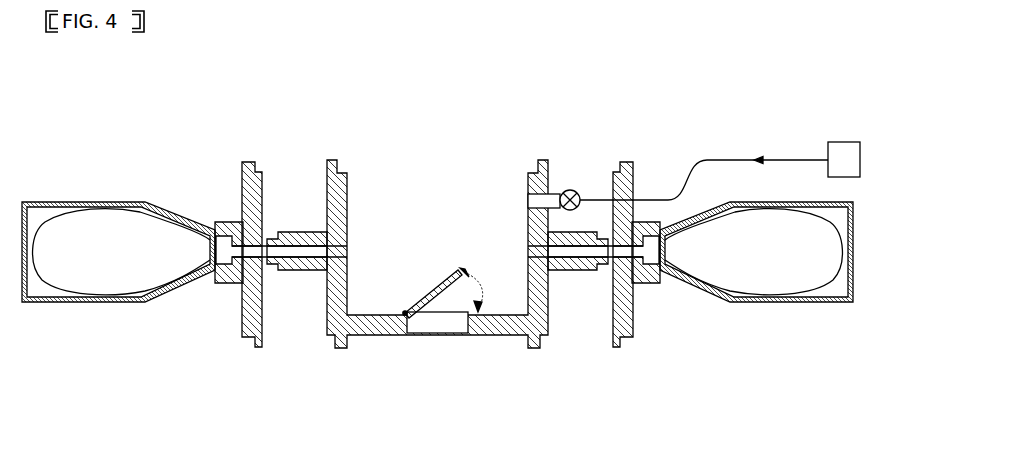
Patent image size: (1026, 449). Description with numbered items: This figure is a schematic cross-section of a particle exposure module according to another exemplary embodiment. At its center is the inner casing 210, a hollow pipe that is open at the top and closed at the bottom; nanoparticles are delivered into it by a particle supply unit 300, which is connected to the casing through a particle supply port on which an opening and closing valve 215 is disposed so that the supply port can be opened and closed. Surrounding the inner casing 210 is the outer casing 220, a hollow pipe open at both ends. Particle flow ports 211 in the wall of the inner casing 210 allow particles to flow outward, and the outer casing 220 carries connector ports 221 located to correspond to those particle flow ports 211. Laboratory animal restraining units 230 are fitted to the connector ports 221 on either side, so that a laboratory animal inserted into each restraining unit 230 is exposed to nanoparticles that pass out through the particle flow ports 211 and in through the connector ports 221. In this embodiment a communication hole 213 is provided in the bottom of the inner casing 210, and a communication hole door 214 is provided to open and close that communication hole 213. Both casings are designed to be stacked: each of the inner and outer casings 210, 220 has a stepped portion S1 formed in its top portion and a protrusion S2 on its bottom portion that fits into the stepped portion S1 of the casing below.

The inner casing 210 is at (330, 159).
The particle flow port 211 is at (300, 231).
The communication hole 213 is at (443, 336).
The communication hole door 214 is at (440, 307).
The opening and closing valve 215 is at (573, 190).
The outer casing 220 is at (247, 161).
The connector port 221 is at (215, 221).
The laboratory animal restraining unit 230 is at (48, 201).
The particle supply unit 300 is at (860, 142).
The stepped portion S1 is at (260, 172).
The protrusion S2 is at (255, 348).